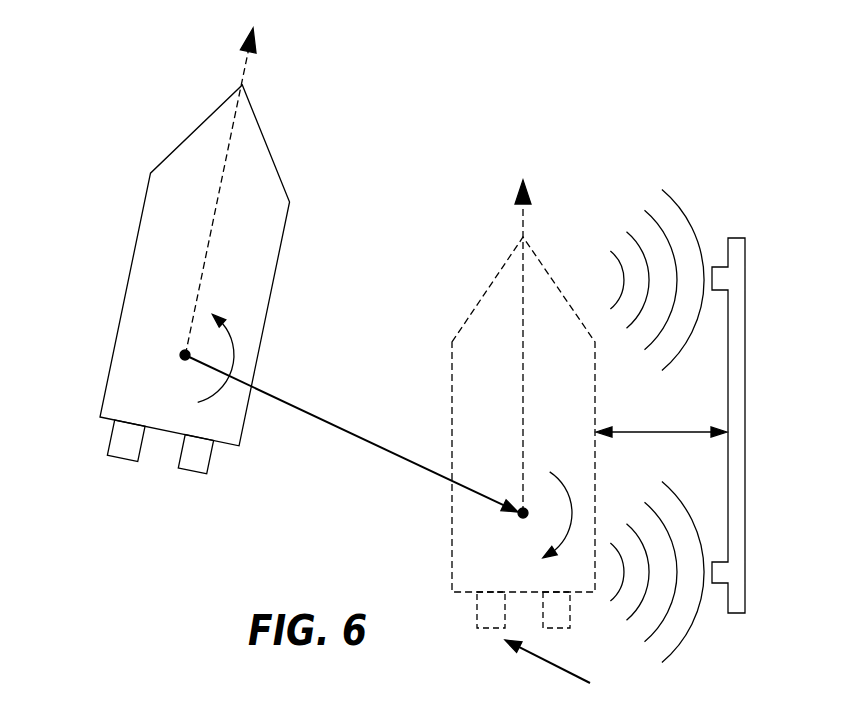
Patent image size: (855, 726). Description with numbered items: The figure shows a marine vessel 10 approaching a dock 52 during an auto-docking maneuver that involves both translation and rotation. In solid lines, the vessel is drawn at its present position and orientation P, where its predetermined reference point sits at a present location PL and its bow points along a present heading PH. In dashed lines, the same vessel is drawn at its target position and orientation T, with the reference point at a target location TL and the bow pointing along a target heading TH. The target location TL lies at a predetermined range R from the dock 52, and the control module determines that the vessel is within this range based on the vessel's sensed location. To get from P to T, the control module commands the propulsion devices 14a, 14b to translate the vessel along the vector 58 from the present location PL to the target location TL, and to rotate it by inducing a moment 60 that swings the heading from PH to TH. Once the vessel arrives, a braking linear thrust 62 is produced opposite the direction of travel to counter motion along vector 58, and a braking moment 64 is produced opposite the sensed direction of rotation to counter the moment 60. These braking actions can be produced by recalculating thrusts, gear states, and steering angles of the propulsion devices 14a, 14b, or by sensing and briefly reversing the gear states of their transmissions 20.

The marine vessel 10 is at (117, 328).
The marine propulsion device 14a is at (112, 443).
The marine propulsion device 14b is at (204, 466).
The transmission 20 is at (158, 470).
The dock 52 is at (746, 400).
The vector 58 is at (363, 440).
The moment 60 is at (233, 358).
The braking linear thrust 62 is at (557, 667).
The braking moment 64 is at (575, 508).
The present position/orientation P is at (104, 233).
The target position/orientation T is at (440, 305).
The present heading PH is at (247, 70).
The target heading TH is at (527, 227).
The present location PL is at (182, 359).
The target location TL is at (517, 515).
The predetermined range R is at (664, 429).